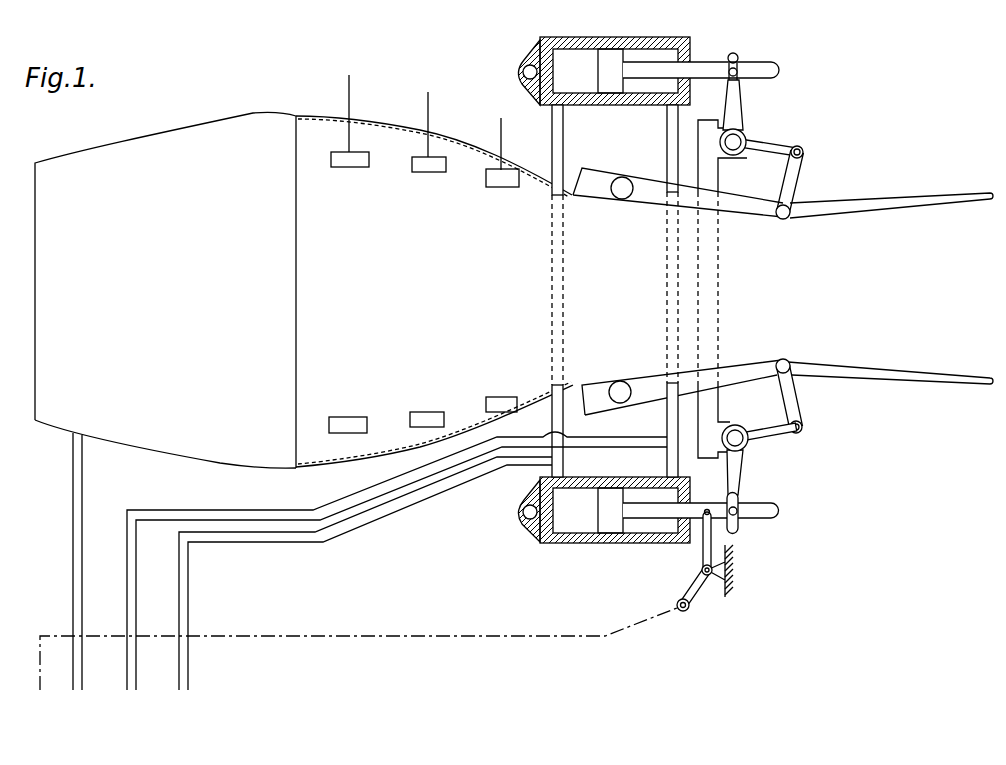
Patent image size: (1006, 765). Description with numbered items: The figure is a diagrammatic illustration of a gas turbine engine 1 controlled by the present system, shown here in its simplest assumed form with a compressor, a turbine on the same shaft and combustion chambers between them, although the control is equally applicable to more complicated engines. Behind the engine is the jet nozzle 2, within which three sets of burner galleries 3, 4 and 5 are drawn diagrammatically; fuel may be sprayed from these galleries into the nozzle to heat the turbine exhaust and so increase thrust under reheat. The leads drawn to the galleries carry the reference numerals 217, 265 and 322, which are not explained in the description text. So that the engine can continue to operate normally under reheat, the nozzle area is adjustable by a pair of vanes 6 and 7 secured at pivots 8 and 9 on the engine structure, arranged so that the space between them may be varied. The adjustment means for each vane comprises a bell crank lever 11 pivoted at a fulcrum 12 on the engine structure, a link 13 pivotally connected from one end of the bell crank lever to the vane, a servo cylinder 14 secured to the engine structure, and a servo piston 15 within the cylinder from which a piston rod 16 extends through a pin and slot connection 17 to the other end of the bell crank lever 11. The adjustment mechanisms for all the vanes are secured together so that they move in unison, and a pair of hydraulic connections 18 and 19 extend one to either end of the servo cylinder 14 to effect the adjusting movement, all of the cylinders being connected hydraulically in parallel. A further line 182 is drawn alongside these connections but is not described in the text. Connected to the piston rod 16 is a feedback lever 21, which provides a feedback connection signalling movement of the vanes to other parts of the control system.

The gas turbine engine 1 is at (153, 284).
The jet nozzle 2 is at (419, 289).
The burner gallery 3 is at (346, 160).
The burner gallery 4 is at (432, 165).
The burner gallery 5 is at (500, 178).
The vane 6 is at (843, 207).
The vane 7 is at (875, 373).
The pivot 8 is at (623, 192).
The pivot 9 is at (619, 387).
The bell crank lever 11 is at (768, 433).
The fulcrum 12 is at (735, 426).
The link 13 is at (793, 398).
The servo cylinder 14 is at (642, 538).
The servo piston 15 is at (608, 503).
The piston rod 16 is at (718, 510).
The pin and slot connection 17 is at (736, 512).
The hydraulic connection 18 is at (185, 620).
The hydraulic connection 19 is at (132, 620).
The feedback lever 21 is at (698, 587).
The supply line 182 is at (77, 620).
The sensor lead 217 is at (348, 92).
The sensor lead 265 is at (428, 112).
The sensor lead 322 is at (501, 135).